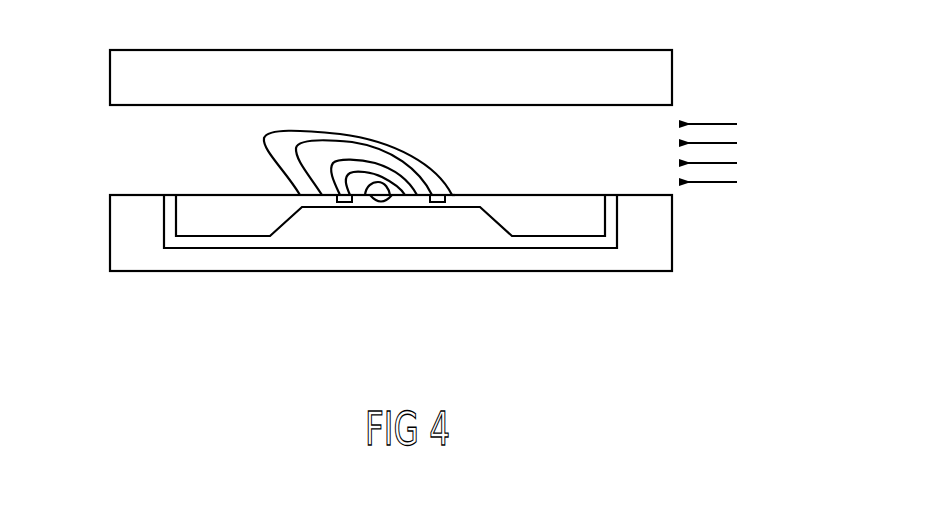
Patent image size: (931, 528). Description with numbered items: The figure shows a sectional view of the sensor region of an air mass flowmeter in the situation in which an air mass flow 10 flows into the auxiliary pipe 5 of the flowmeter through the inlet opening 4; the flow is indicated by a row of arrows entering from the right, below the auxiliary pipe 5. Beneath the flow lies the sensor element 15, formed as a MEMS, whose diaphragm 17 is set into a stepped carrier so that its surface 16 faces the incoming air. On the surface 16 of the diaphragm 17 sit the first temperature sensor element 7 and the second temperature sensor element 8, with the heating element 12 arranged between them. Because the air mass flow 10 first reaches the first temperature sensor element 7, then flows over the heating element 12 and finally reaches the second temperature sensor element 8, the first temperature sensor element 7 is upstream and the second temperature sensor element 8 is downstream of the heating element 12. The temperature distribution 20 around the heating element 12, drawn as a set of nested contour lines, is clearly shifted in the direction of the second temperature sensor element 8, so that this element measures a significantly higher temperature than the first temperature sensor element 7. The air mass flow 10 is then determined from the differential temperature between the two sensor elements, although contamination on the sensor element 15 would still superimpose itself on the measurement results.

The inlet opening 4 is at (660, 115).
The auxiliary pipe 5 is at (672, 60).
The first temperature sensor element 7 is at (435, 203).
The second temperature sensor element 8 is at (345, 203).
The air mass flow 10 is at (710, 182).
The heating element 12 is at (387, 203).
The sensor element 15 is at (497, 182).
The surface 16 is at (457, 195).
The diaphragm 17 is at (462, 207).
The temperature distribution 20 is at (402, 156).